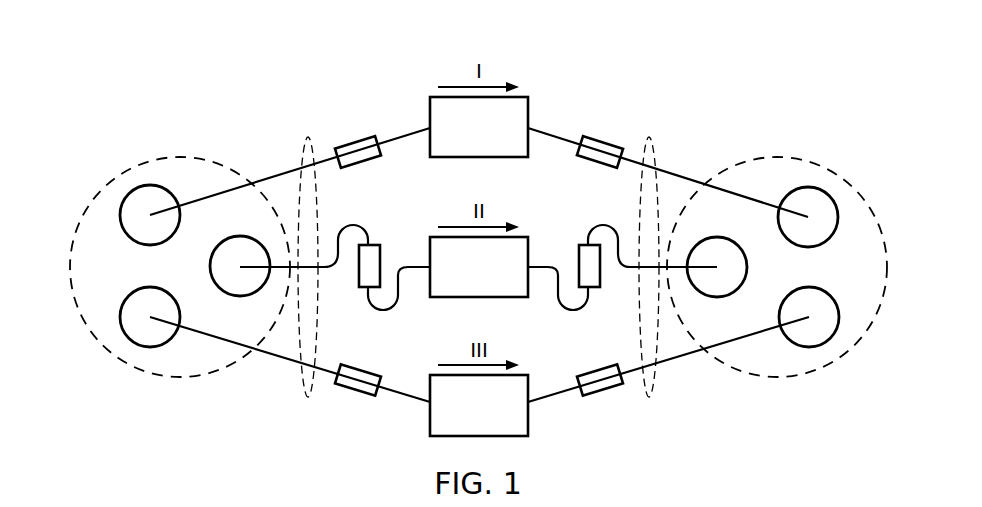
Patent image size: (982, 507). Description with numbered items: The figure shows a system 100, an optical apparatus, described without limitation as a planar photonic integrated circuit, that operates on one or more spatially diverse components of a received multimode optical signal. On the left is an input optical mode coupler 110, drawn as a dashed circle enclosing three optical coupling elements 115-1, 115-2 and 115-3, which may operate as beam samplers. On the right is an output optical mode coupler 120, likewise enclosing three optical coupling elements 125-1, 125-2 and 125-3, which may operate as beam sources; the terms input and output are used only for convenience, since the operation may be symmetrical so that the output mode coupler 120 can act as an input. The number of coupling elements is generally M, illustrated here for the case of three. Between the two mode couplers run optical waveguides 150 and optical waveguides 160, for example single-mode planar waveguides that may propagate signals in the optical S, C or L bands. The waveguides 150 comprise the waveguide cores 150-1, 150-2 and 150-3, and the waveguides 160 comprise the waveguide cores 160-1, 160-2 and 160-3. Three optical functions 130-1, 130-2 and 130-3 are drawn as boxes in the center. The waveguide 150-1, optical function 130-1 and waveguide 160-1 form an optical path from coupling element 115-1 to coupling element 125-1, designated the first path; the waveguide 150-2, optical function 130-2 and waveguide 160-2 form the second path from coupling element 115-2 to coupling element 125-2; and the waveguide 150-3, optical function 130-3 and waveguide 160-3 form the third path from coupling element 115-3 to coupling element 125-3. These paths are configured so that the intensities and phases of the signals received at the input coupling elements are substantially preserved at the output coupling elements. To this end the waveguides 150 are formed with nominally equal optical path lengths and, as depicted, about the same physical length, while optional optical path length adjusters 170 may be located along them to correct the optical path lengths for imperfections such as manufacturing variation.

The system 100 is at (612, 50).
The input optical mode coupler 110 is at (170, 148).
The optical coupling element 115-1 is at (132, 186).
The optical coupling element 115-2 is at (212, 276).
The optical coupling element 115-3 is at (138, 346).
The output optical mode coupler 120 is at (782, 146).
The optical coupling element 125-1 is at (828, 190).
The optical coupling element 125-2 is at (746, 276).
The optical coupling element 125-3 is at (820, 346).
The optical function 130-1 is at (451, 141).
The optical function 130-2 is at (451, 281).
The optical function 130-3 is at (451, 420).
The optical waveguides 150 is at (307, 140).
The waveguide core 150-1 is at (384, 138).
The waveguide core 150-2 is at (360, 226).
The waveguide core 150-3 is at (414, 400).
The optical waveguides 160 is at (650, 140).
The waveguide core 160-1 is at (574, 138).
The waveguide core 160-2 is at (598, 226).
The waveguide core 160-3 is at (555, 398).
The optical path length adjusters 170 is at (354, 392).